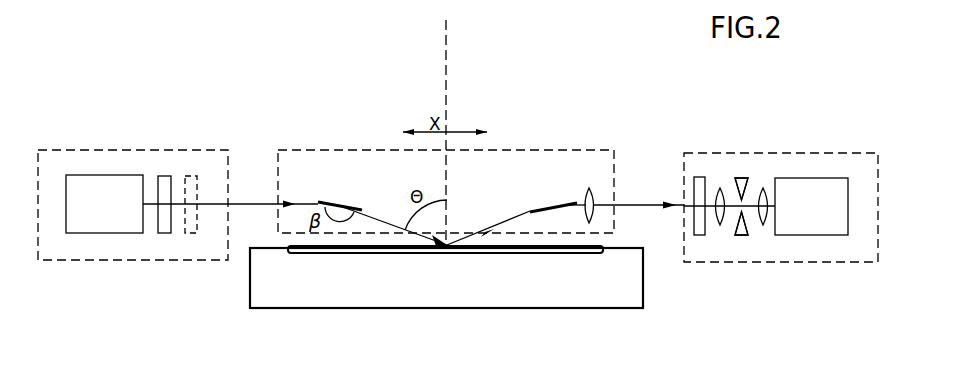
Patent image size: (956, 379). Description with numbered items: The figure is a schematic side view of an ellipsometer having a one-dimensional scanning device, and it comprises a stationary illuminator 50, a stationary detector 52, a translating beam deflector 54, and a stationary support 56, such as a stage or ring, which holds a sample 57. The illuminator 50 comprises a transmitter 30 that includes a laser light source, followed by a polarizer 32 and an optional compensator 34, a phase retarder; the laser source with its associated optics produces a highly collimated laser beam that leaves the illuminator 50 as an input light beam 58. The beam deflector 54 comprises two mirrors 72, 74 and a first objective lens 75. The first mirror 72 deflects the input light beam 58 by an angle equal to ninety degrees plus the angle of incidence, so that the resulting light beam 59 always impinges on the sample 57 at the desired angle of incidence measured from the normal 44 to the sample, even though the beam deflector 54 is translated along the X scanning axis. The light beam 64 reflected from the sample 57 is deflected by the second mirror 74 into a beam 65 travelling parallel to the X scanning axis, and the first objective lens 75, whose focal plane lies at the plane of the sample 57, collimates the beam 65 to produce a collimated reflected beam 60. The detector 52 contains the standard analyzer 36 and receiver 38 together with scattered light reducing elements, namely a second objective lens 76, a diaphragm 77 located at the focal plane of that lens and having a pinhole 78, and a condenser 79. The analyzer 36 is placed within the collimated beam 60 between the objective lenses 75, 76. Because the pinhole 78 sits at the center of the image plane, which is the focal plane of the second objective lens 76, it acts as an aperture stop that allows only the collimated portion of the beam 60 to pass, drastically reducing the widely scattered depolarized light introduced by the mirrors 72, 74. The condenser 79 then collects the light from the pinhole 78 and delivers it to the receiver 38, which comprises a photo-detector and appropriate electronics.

The transmitter 30 is at (102, 180).
The polarizer 32 is at (162, 177).
The compensator 34 is at (192, 177).
The analyzer 36 is at (698, 230).
The receiver 38 is at (810, 230).
The normal 44 is at (445, 68).
The illuminator 50 is at (62, 155).
The detector 52 is at (842, 160).
The beam deflector 54 is at (547, 160).
The support 56 is at (253, 288).
The sample 57 is at (575, 254).
The input light beam 58 is at (253, 204).
The light beam 59 is at (387, 220).
The collimated reflected beam 60 is at (645, 207).
The light beam 64 is at (513, 220).
The beam 65 is at (582, 200).
The mirror 72 is at (355, 205).
The mirror 74 is at (532, 207).
The first objective lens 75 is at (592, 188).
The second objective lens 76 is at (722, 190).
The diaphragm 77 is at (738, 177).
The pinhole 78 is at (742, 207).
The condenser 79 is at (774, 165).